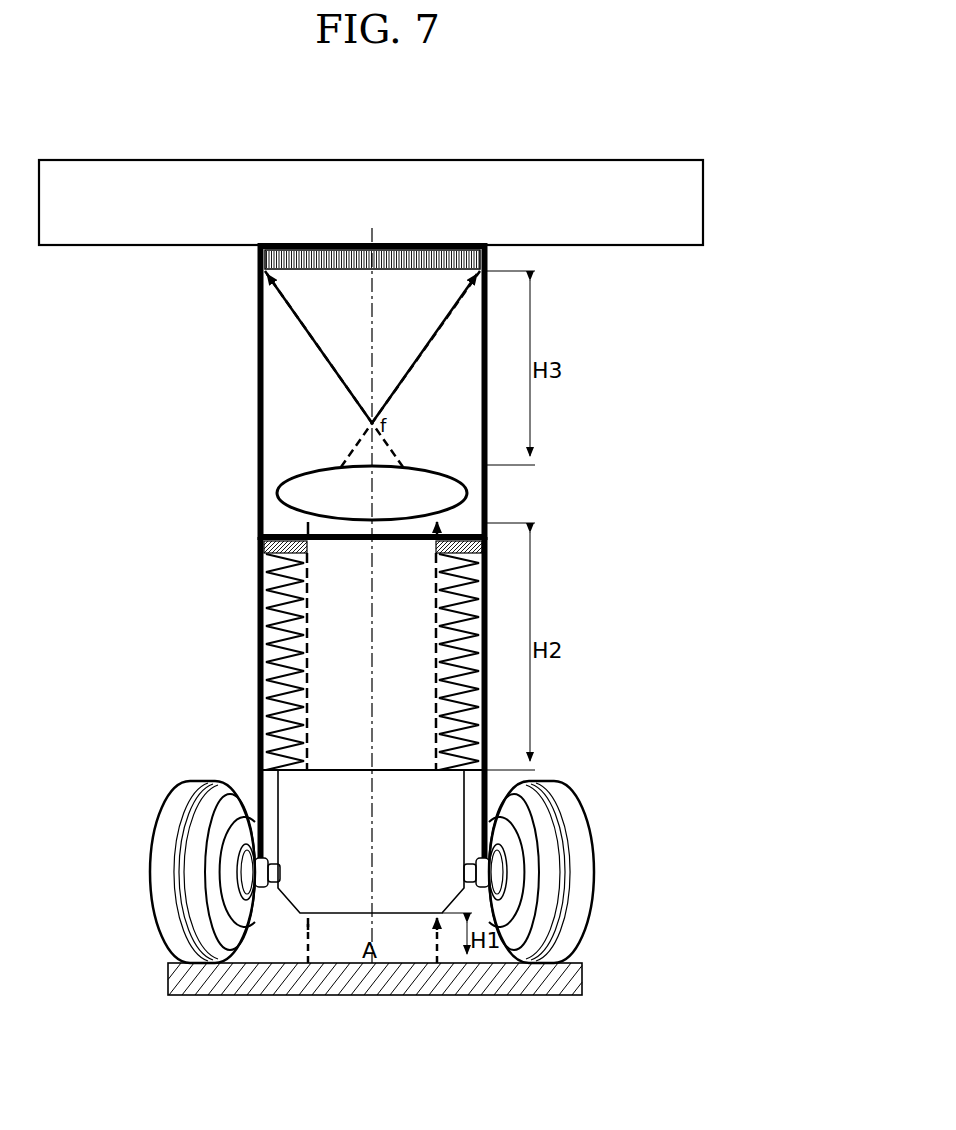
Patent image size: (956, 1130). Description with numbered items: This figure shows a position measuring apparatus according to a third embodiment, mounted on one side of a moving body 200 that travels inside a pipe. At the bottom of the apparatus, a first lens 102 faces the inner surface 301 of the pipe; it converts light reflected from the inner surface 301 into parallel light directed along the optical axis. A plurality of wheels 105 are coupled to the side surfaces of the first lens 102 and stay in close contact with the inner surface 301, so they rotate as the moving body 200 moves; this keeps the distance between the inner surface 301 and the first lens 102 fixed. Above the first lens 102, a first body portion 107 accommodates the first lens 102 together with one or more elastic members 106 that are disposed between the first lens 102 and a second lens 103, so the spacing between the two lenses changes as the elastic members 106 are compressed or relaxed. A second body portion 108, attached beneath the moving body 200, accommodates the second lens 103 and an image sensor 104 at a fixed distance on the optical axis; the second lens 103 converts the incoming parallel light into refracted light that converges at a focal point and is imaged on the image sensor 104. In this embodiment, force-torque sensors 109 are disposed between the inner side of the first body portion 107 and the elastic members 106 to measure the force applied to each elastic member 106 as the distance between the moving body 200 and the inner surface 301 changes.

The moving body 200 is at (588, 160).
The image sensor 104 is at (262, 262).
The second body portion 108 is at (258, 418).
The first body portion 107 is at (258, 585).
The second lens 103 is at (276, 493).
The force-torque sensor 109 is at (437, 558).
The elastic member 106 is at (437, 663).
The first lens 102 is at (260, 793).
The wheels 105 is at (165, 830).
The inner surface of the pipe 301 is at (392, 997).